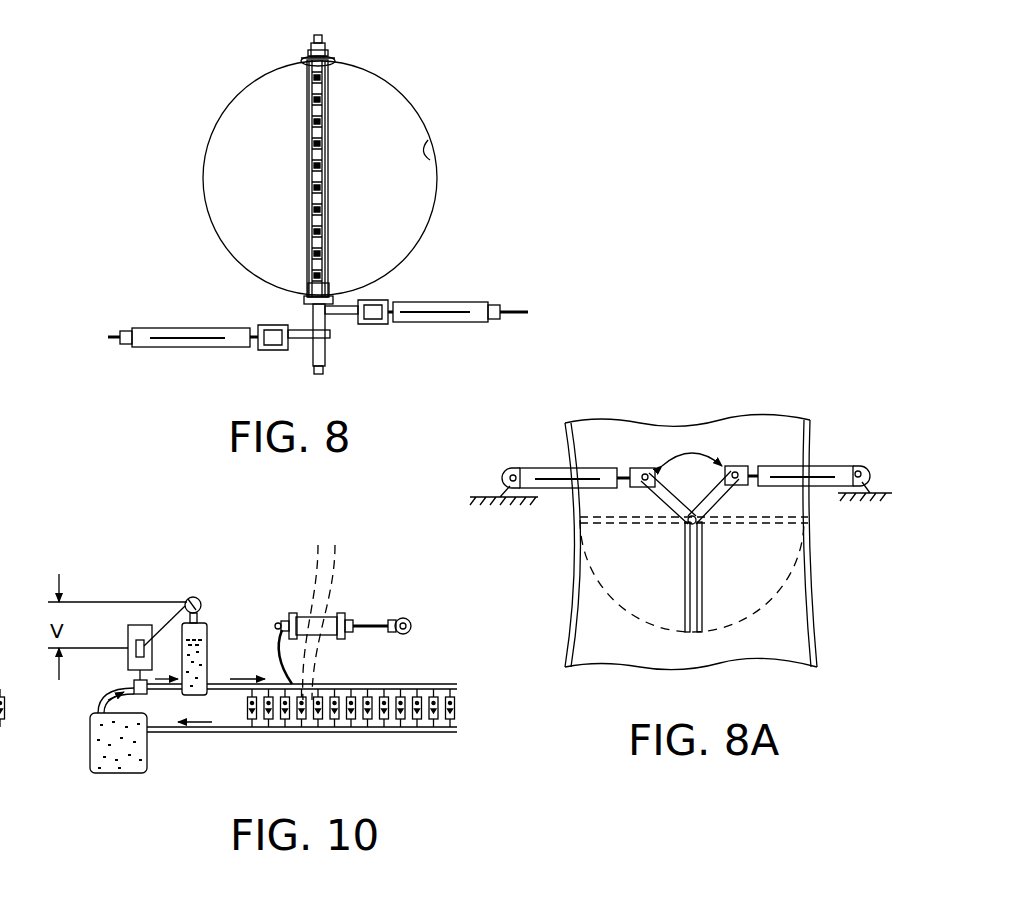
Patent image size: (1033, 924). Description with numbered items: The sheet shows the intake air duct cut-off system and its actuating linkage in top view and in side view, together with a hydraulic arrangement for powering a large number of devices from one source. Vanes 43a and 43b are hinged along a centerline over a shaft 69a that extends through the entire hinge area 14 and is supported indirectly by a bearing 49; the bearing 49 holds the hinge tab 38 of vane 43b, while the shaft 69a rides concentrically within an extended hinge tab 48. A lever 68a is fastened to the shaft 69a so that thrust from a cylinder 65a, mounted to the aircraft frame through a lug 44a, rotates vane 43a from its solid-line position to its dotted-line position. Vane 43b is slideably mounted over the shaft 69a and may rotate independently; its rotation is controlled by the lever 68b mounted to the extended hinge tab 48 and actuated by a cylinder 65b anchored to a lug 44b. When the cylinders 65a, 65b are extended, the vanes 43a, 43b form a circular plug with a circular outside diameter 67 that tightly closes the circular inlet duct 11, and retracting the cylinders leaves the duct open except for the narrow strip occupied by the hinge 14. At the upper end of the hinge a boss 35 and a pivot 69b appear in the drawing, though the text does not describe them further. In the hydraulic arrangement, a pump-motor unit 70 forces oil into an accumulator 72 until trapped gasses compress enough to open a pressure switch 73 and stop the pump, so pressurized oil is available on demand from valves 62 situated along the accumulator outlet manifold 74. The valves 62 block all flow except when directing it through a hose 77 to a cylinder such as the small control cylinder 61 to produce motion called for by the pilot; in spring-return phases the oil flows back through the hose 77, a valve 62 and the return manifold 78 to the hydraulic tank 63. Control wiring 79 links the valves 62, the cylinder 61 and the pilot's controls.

In FIG. 8A, the circular inlet duct 11 is at (624, 650).
In FIG. 8, the hinge area 14 is at (300, 150).
In FIG. 8, the upper bearing boss 35 is at (303, 58).
In FIG. 8, the hinge tab 38 is at (326, 342).
In FIG. 8, the vane 43a is at (308, 186).
In FIG. 8A, the vane 43a is at (685, 580).
In FIG. 8, the vane 43b is at (326, 190).
In FIG. 8A, the vane 43b is at (702, 585).
In FIG. 8A, the lug 44a is at (500, 486).
In FIG. 8A, the lug 44b is at (866, 480).
In FIG. 8, the extended hinge tab 48 is at (310, 288).
In FIG. 8, the bearing 49 is at (304, 300).
In FIG. 10, the control cylinder 61 is at (334, 636).
In FIG. 10, the valves 62 is at (456, 705).
In FIG. 10, the hydraulic tank 63 is at (92, 742).
In FIG. 8, the cylinder 65a is at (195, 348).
In FIG. 8A, the cylinder 65a is at (548, 468).
In FIG. 8, the cylinder 65b is at (440, 324).
In FIG. 8A, the cylinder 65b is at (826, 466).
In FIG. 8, the circular outside diameter 67 is at (431, 150).
In FIG. 8, the lever 68a is at (300, 345).
In FIG. 8A, the lever 68a is at (656, 499).
In FIG. 8, the lever 68b is at (358, 318).
In FIG. 8A, the lever 68b is at (718, 497).
In FIG. 8, the shaft 69a is at (318, 35).
In FIG. 8, the pivot pin 69b is at (330, 53).
In FIG. 10, the pump-motor unit 70 is at (134, 664).
In FIG. 10, the accumulator 72 is at (208, 634).
In FIG. 10, the pressure switch 73 is at (198, 598).
In FIG. 10, the accumulator outlet manifold 74 is at (396, 684).
In FIG. 10, the hose 77 is at (280, 658).
In FIG. 10, the return manifold 78 is at (222, 733).
In FIG. 10, the control wiring 79 is at (330, 572).